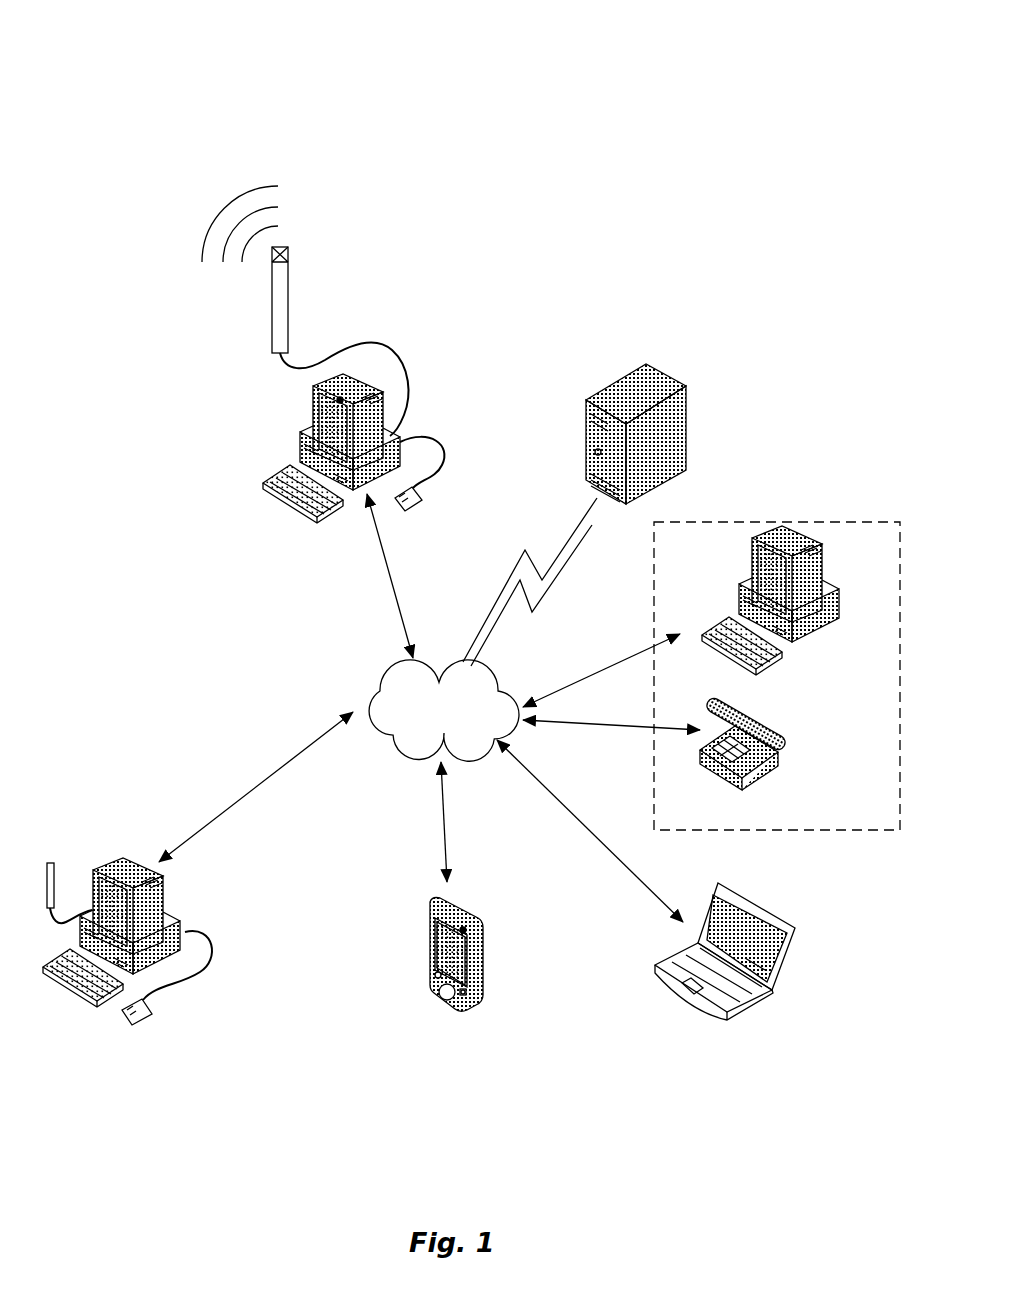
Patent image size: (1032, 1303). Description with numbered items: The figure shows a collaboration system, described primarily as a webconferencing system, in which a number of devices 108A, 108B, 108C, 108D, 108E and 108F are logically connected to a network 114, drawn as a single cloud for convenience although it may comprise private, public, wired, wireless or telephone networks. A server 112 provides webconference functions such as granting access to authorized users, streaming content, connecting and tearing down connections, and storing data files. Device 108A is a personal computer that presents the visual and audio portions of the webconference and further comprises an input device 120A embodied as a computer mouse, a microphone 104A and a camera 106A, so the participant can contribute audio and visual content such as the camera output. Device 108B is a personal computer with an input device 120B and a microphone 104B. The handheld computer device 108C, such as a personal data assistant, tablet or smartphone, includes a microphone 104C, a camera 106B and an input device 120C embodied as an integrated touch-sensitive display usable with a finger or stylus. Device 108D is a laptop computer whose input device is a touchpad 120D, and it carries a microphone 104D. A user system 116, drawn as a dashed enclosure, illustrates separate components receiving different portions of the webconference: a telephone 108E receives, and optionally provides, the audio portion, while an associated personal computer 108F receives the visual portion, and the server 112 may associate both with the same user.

The microphone 104A is at (288, 293).
The microphone 104B is at (57, 873).
The microphone 104C is at (470, 998).
The microphone 104D is at (757, 975).
The camera 106A is at (340, 400).
The camera 106B is at (463, 930).
The device 108A is at (303, 447).
The device 108B is at (167, 883).
The device 108C is at (467, 910).
The device 108D is at (753, 900).
The telephone 108E is at (774, 762).
The associated device 108F is at (780, 552).
The server 112 is at (684, 390).
The network 114 is at (517, 687).
The user system 116 is at (810, 522).
The input device 120A is at (420, 508).
The input device 120B is at (150, 1020).
The input device 120C is at (457, 953).
The touchpad 120D is at (685, 985).